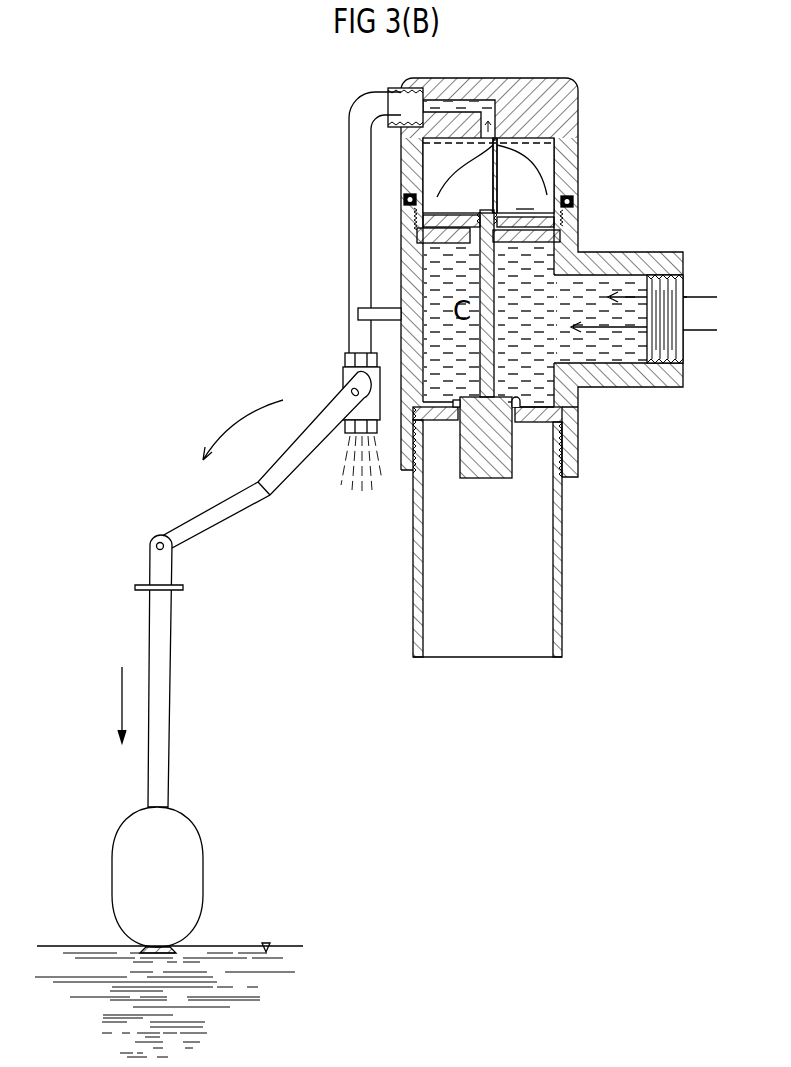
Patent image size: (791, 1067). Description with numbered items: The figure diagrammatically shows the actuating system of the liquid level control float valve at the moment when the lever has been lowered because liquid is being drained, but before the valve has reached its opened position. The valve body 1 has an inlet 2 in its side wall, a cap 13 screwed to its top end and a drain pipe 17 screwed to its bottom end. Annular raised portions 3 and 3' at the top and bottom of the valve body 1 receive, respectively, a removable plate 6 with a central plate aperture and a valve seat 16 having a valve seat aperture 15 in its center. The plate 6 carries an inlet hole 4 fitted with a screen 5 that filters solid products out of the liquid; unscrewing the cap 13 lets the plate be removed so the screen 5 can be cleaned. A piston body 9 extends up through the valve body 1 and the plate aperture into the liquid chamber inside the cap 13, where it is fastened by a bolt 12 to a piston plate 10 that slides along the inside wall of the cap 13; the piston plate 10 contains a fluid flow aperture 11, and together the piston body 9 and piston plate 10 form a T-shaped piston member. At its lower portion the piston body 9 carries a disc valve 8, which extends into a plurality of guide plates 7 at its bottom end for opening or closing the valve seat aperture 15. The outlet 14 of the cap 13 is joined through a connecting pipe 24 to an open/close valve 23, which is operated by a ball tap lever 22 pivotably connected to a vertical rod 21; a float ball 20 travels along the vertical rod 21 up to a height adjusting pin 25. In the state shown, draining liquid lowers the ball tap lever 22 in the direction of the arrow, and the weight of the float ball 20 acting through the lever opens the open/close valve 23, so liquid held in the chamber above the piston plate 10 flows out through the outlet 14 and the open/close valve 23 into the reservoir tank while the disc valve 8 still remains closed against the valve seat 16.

The valve body 1 is at (572, 408).
The inlet 2 is at (667, 282).
The annular raised portion 3 is at (563, 232).
The annular raised portion 3' is at (579, 431).
The inlet hole 4 is at (420, 238).
The screen 5 is at (440, 247).
The plate 6 is at (553, 243).
The guide plates 7 is at (520, 432).
The disc valve 8 is at (557, 435).
The piston body 9 is at (490, 322).
The piston plate 10 is at (565, 205).
The fluid flow aperture 11 is at (420, 217).
The bolt 12 is at (496, 140).
The cap 13 is at (557, 97).
The outlet 14 is at (452, 106).
The valve seat aperture 15 is at (530, 402).
The valve seat 16 is at (443, 413).
The drain pipe 17 is at (418, 597).
The float ball 20 is at (190, 848).
The vertical rod 21 is at (163, 693).
The ball tap lever 22 is at (240, 498).
The open/close valve 23 is at (345, 380).
The connecting pipe 24 is at (364, 137).
The height adjusting pin 25 is at (180, 589).